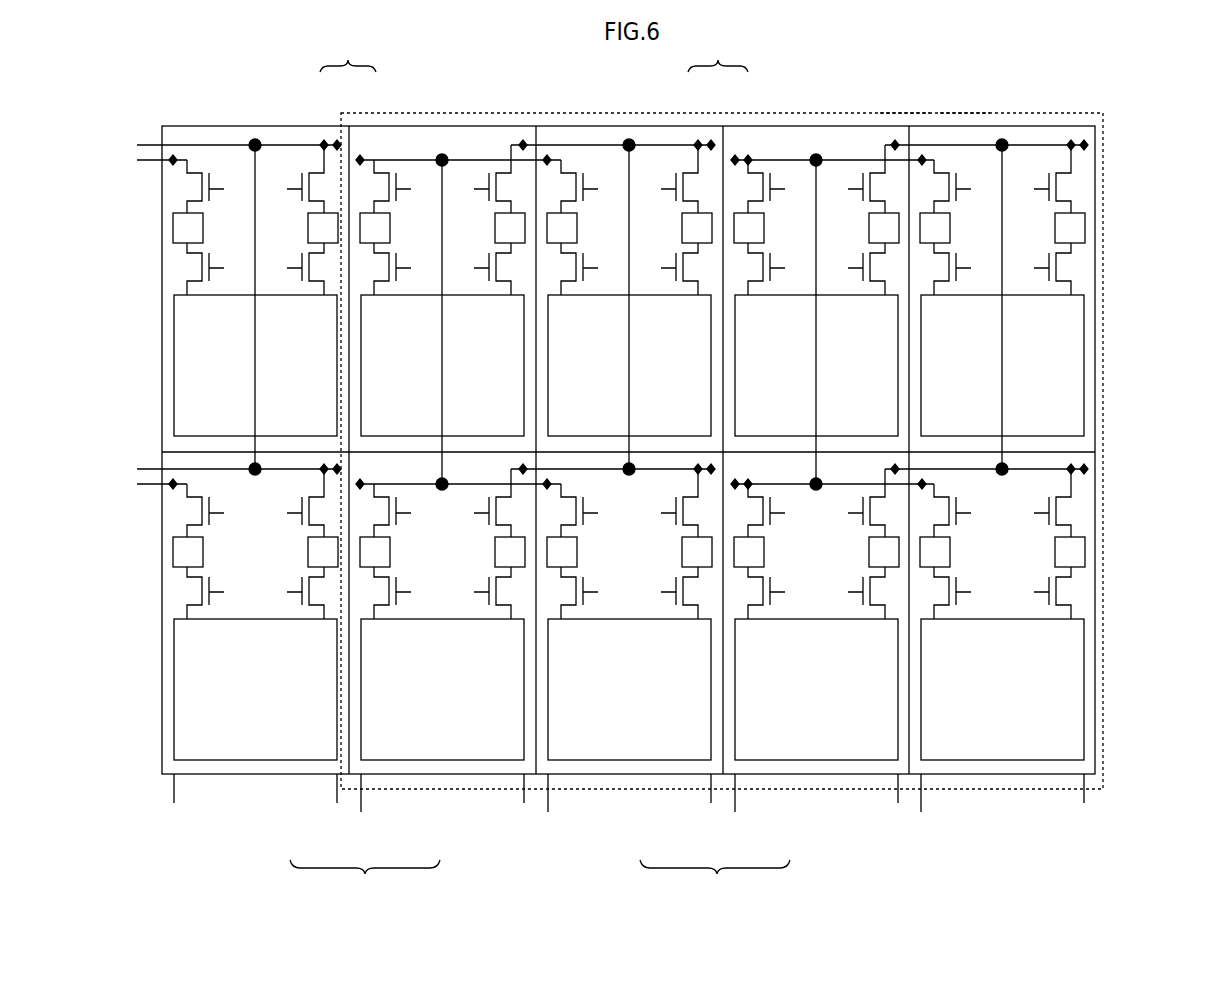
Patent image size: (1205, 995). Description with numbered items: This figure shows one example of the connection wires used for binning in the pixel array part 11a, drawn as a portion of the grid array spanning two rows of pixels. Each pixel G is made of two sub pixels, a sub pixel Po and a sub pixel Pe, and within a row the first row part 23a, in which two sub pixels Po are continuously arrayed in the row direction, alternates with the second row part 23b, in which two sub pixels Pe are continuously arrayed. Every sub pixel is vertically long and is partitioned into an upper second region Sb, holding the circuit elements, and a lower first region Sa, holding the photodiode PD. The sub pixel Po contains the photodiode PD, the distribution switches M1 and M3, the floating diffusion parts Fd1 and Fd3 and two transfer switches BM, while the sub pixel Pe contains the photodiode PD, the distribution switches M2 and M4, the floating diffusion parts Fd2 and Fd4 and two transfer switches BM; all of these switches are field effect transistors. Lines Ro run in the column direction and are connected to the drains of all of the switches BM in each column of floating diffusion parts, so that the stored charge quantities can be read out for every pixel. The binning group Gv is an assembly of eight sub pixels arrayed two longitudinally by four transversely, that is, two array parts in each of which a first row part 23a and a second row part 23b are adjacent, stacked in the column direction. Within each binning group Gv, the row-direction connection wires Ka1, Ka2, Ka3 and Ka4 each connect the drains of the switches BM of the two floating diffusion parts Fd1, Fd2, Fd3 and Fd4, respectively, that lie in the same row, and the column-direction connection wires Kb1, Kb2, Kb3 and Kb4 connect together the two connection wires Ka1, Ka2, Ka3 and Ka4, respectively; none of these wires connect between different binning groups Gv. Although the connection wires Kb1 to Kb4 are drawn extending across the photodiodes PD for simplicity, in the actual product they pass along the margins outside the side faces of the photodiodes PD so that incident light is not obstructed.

The pixel array part 11a is at (116, 225).
The first row part 23a is at (900, 114).
The second row part 23b is at (546, 114).
The binning group Gv is at (968, 140).
The connection wire Ka1 is at (150, 155).
The connection wire Ka2 is at (372, 148).
The connection wire Ka3 is at (300, 143).
The connection wire Ka4 is at (526, 143).
The connection wire Kb1 is at (817, 342).
The connection wire Kb2 is at (443, 342).
The connection wire Kb3 is at (255, 378).
The connection wire Kb4 is at (630, 342).
The line Ro is at (176, 158).
The sub pixel Po is at (332, 143).
The sub pixel Pe is at (360, 156).
The first region Sa is at (190, 356).
The second region Sb is at (160, 259).
The photodiode PD is at (644, 527).
The transfer switch BM is at (629, 362).
The floating diffusion part Fd1 is at (580, 389).
The floating diffusion part Fd2 is at (487, 389).
The floating diffusion part Fd3 is at (678, 389).
The floating diffusion part Fd4 is at (585, 389).
The distribution switch M1 is at (586, 389).
The distribution switch M2 is at (493, 389).
The distribution switch M3 is at (672, 382).
The distribution switch M4 is at (579, 382).